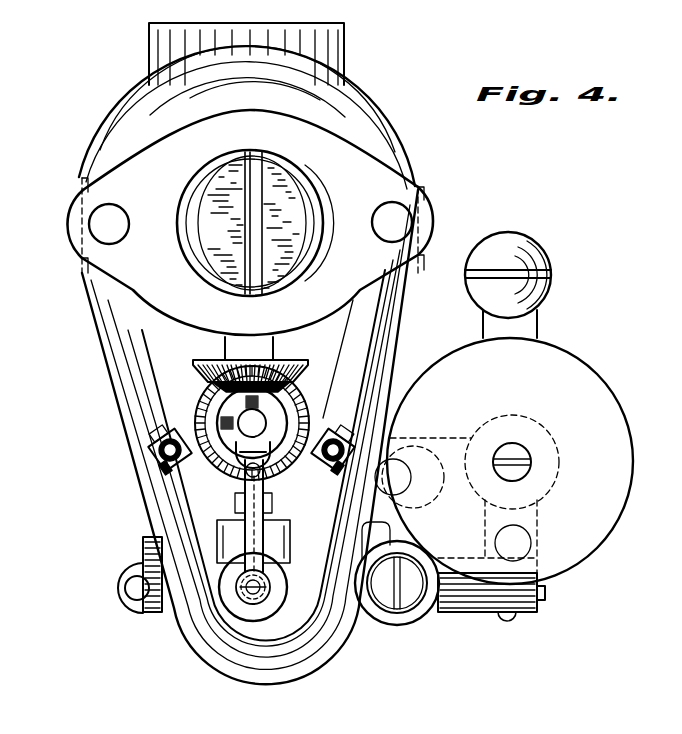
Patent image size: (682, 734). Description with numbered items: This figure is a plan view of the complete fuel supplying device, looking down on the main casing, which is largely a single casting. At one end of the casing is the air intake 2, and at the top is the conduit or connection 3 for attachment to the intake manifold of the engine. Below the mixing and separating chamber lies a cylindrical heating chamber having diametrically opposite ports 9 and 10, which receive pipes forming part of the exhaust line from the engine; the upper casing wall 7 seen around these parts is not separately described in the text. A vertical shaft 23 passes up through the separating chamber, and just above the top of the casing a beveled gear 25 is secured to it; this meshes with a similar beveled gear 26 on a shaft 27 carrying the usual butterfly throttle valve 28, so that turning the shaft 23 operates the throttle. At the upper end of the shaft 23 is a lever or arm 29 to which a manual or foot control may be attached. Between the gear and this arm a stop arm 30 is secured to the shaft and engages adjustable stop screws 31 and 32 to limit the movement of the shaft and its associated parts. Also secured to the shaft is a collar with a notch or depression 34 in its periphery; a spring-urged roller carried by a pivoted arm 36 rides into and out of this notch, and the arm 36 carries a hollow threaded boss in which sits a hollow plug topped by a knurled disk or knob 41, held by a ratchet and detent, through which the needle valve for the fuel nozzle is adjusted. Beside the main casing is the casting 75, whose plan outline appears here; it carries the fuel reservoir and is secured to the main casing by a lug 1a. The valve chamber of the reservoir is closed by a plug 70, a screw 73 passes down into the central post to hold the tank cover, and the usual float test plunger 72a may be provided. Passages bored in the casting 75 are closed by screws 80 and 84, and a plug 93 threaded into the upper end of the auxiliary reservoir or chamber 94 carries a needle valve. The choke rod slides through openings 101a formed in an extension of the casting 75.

The air intake 2 is at (330, 27).
The casing 7 is at (238, 62).
The port 9 is at (80, 184).
The port 10 is at (425, 176).
The conduit or connection 3 is at (183, 258).
The butterfly throttle valve 28 is at (283, 190).
The shaft 27 is at (258, 237).
The beveled gear 26 is at (300, 366).
The beveled gear 25 is at (311, 402).
The shaft 23 is at (228, 418).
The adjustable stop screw 31 is at (162, 470).
The adjustable stop screw 32 is at (333, 470).
The notch or depression 34 is at (236, 458).
The stop arm 30 is at (272, 508).
The lever or arm 29 is at (226, 540).
The arm 36 is at (290, 552).
The knurled disk or knob 41 is at (248, 606).
The casting 75 is at (158, 614).
The openings 101a is at (134, 592).
The auxiliary reservoir or chamber 94 is at (372, 621).
The plug 93 is at (405, 599).
The lug 1a is at (391, 438).
The plug 70 is at (530, 253).
The screw 73 is at (519, 460).
The float test plunger 72a is at (520, 545).
The screw 84 is at (547, 597).
The screw 80 is at (510, 621).